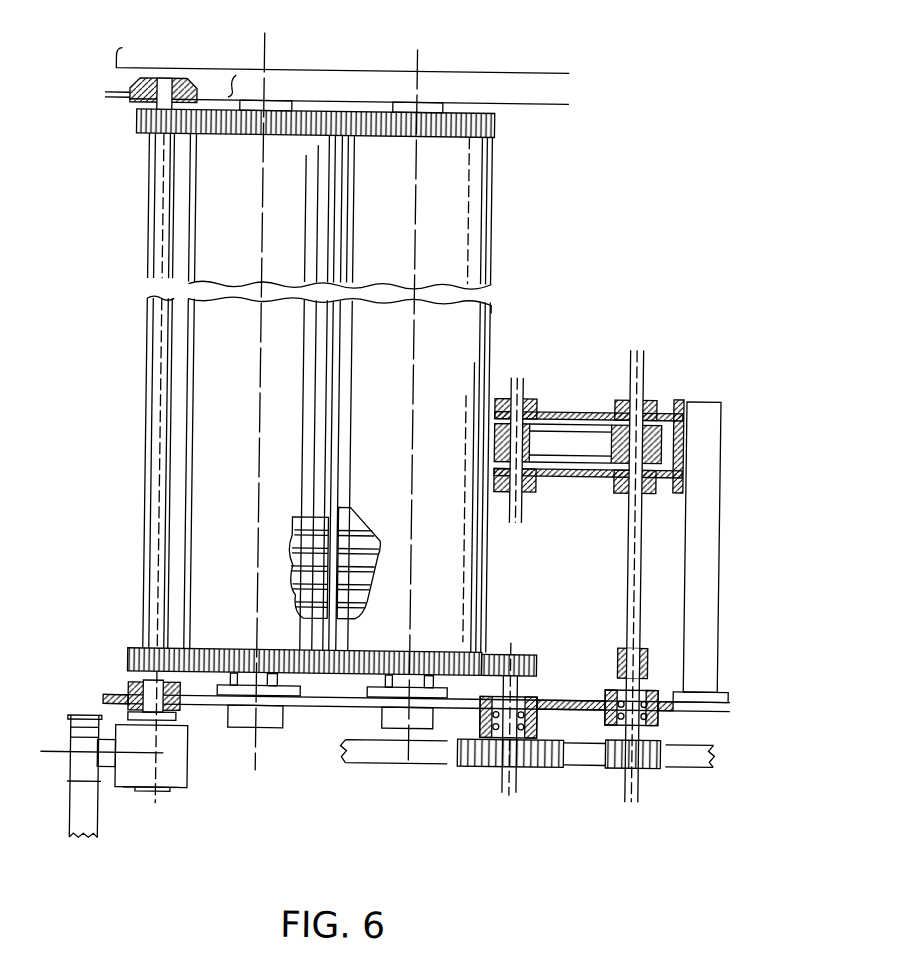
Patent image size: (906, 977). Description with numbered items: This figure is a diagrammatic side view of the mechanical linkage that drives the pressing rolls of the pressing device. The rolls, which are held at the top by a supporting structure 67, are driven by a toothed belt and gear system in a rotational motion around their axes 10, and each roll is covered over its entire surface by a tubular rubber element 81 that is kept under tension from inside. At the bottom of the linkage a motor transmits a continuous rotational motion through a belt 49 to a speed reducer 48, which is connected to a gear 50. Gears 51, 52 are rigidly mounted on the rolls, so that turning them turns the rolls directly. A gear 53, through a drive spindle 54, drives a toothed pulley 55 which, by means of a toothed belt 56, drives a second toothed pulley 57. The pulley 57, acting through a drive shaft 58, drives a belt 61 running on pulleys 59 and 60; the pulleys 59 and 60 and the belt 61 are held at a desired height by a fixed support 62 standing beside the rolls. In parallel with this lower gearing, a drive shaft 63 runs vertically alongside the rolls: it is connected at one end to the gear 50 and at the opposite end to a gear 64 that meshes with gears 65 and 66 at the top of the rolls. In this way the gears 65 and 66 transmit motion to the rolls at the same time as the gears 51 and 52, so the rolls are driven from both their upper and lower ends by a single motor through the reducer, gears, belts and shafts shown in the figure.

The axis 10 is at (260, 47).
The speed reducer 48 is at (182, 767).
The belt 49 is at (83, 808).
The gear 50 is at (136, 657).
The gear 51 is at (228, 651).
The gear 52 is at (433, 648).
The gear 53 is at (521, 649).
The drive spindle 54 is at (526, 685).
The toothed pulley 55 is at (545, 765).
The toothed belt 56 is at (395, 759).
The toothed pulley 57 is at (660, 750).
The drive shaft 58 is at (632, 569).
The pulley 59 is at (657, 418).
The pulley 60 is at (542, 409).
The belt 61 is at (574, 434).
The fixed support 62 is at (708, 448).
The drive shaft 63 is at (155, 222).
The gear 64 is at (133, 117).
The gear 65 is at (302, 140).
The gear 66 is at (483, 120).
The supporting structure 67 is at (560, 92).
The tubular rubber element 81 is at (452, 189).